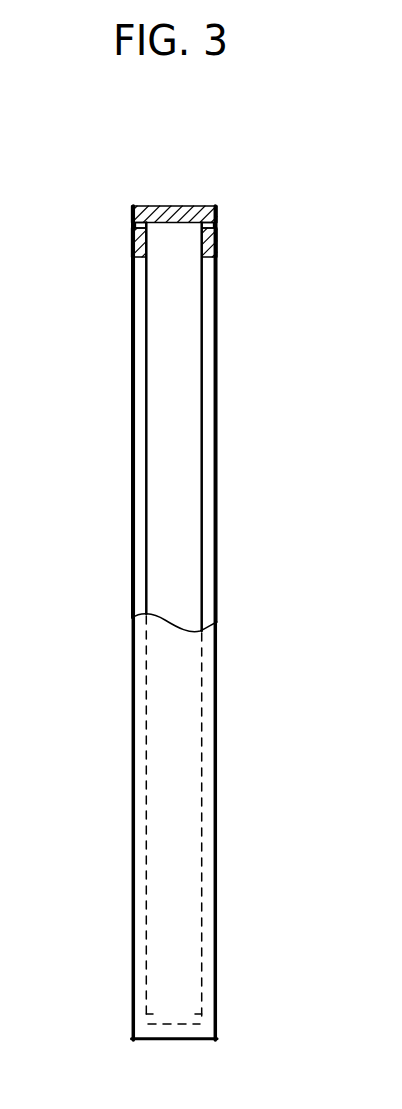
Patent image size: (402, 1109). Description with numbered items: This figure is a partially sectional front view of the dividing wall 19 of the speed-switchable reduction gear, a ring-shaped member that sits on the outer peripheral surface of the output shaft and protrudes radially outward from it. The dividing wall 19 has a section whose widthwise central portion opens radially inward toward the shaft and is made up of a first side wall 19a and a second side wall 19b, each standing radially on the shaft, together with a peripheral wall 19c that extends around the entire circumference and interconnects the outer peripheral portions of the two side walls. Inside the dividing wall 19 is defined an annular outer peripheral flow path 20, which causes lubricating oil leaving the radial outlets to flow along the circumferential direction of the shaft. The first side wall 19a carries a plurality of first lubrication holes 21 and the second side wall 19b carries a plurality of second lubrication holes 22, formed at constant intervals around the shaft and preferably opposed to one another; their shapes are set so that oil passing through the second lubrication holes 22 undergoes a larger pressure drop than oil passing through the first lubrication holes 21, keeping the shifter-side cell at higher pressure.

The dividing wall 19 is at (210, 168).
The first side wall 19a is at (217, 245).
The second side wall 19b is at (132, 247).
The peripheral wall 19c is at (173, 205).
The outer peripheral flow path 20 is at (175, 252).
The first lubrication holes 21 is at (217, 228).
The second lubrication holes 22 is at (132, 230).